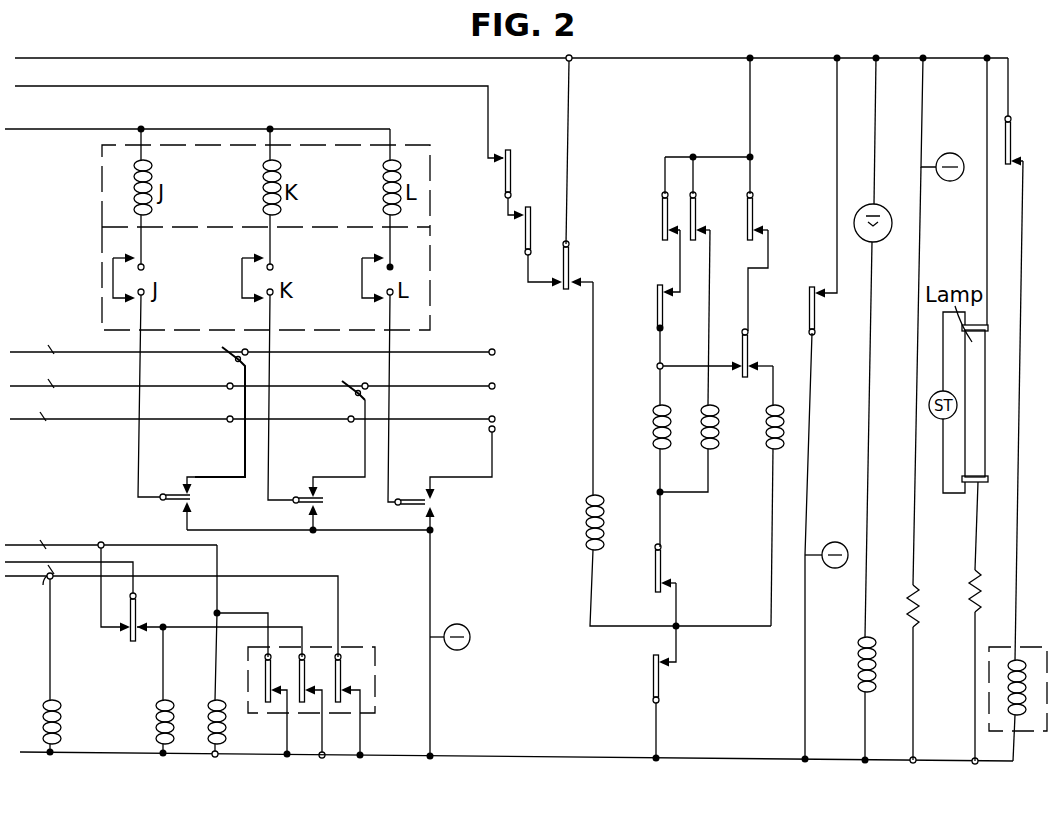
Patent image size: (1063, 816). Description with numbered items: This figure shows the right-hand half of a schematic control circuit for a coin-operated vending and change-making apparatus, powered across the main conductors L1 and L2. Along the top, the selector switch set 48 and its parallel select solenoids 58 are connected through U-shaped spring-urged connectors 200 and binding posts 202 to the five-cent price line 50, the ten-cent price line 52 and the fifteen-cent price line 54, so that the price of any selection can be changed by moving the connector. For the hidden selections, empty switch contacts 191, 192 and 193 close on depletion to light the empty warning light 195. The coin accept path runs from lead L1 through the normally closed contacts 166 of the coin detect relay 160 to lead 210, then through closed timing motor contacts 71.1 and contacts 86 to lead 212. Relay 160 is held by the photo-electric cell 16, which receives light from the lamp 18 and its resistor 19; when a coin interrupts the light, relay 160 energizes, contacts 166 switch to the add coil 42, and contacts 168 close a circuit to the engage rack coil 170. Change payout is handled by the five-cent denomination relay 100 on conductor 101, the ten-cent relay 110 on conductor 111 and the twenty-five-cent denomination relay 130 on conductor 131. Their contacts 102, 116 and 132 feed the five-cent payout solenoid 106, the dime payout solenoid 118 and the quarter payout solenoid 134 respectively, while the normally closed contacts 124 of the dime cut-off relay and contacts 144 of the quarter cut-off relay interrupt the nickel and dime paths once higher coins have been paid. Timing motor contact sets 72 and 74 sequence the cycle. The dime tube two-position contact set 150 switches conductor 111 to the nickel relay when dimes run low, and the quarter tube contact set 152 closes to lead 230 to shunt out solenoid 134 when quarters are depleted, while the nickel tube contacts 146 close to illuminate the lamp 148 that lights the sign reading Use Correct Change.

The lead 212 is at (65, 85).
The select solenoids 58 is at (102, 180).
The selector switch set 48 is at (102, 241).
The 15¢ price line 54 is at (82, 357).
The 10¢ price line 52 is at (82, 391).
The 5¢ price line 50 is at (82, 424).
The binding post 202 is at (497, 421).
The U-shaped spring-urged connector 200 is at (497, 430).
The empty switch contacts 191 is at (190, 499).
The empty switch contacts 192 is at (323, 502).
The empty switch contacts 193 is at (425, 504).
The contacts 86 is at (500, 166).
The timing motor contact set 71.1 is at (520, 210).
The lead 210 is at (518, 273).
The contacts of coin detect relay 166 is at (572, 276).
The contacts of 5¢ denomination relay 102 is at (676, 250).
The contacts of 10¢ relay 116 is at (700, 228).
The contacts of 25¢ denomination relay 132 is at (756, 228).
The normally closed contacts of dime cut-off relay 124 is at (670, 300).
The quarter tube two-position contact set 152 is at (752, 350).
The lead 230 is at (698, 366).
The 5¢ payout solenoid 106 is at (654, 448).
The dime payout solenoid 118 is at (706, 448).
The 25¢ payout solenoid 134 is at (766, 448).
The add coil 42 is at (602, 530).
The normally closed contacts of quarter cut-off relay 144 is at (663, 574).
The timing motor contact set 74 is at (664, 668).
The 5¢ tube switch contacts 146 is at (820, 300).
The photo-electric cell 16 is at (882, 236).
The lamp 18 is at (954, 152).
The contacts of coin detect relay 168 is at (1006, 168).
The lamp 148 is at (848, 544).
The coin detect relay 160 is at (860, 677).
The resistor 19 is at (920, 618).
The engage rack coil 170 is at (1022, 674).
The 5¢ denomination conductor 101 is at (102, 544).
The 10¢ denomination conductor 111 is at (126, 569).
The 25¢ denomination conductor 131 is at (157, 580).
The dime tube two-position contact set 150 is at (130, 640).
The 10¢ relay 110 is at (182, 686).
The 25¢ denomination relay 130 is at (80, 701).
The 5¢ denomination relay 100 is at (224, 722).
The timing motor contact set 72 is at (375, 697).
The empty warning light 195 is at (482, 614).
The main conductor L1 is at (51, 56).
The main conductor L2 is at (18, 758).